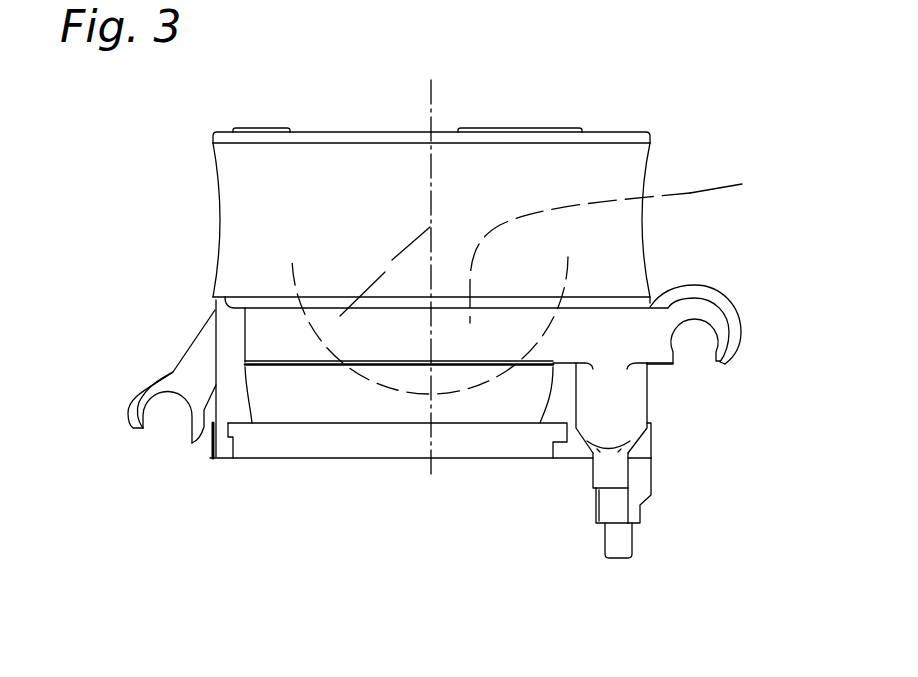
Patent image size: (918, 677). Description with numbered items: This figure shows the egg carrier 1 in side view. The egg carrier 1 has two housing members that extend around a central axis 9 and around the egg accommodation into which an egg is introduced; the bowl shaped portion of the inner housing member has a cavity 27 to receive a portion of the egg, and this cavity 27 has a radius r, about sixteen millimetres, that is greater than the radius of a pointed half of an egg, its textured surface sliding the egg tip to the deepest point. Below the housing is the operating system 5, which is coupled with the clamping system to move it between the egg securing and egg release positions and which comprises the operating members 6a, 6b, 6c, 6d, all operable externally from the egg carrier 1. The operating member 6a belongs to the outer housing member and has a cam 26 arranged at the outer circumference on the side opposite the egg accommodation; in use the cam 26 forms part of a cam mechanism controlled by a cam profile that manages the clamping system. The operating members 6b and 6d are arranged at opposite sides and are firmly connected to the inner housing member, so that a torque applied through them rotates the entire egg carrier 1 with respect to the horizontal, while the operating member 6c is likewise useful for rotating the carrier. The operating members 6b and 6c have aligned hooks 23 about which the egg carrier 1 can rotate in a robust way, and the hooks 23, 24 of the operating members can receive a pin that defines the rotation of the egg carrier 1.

The egg carrier 1 is at (589, 99).
The central axis 9 is at (432, 103).
The cavity 27 is at (618, 252).
The radius r is at (430, 310).
The operating system 5 is at (496, 505).
The operating member 6a is at (598, 563).
The cam 26 is at (626, 543).
The operating member 6b is at (636, 480).
The operating member 6c is at (734, 281).
The hook 23 is at (693, 332).
The operating member 6d is at (142, 365).
The hook 24 is at (168, 425).